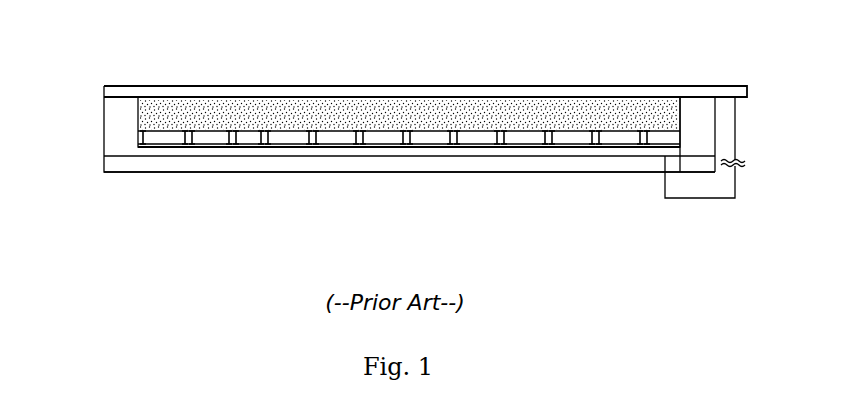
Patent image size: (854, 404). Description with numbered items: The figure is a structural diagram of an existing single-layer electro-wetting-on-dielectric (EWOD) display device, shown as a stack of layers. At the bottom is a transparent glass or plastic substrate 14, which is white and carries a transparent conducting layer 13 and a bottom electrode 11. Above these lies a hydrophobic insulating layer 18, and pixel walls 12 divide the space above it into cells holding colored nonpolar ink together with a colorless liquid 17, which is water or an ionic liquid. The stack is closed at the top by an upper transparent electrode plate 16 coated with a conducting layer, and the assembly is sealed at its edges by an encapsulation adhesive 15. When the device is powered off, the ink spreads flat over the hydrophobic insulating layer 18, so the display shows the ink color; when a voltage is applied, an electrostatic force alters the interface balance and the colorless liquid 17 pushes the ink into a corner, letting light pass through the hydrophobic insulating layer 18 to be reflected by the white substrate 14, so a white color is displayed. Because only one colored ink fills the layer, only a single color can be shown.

The bottom electrode 11 is at (592, 156).
The pixel wall 12 is at (501, 147).
The transparent conducting layer 13 is at (283, 148).
The substrate 14 is at (166, 158).
The encapsulation adhesive 15 is at (104, 130).
The upper transparent electrode plate 16 is at (153, 86).
The colorless liquid 17 is at (392, 105).
The hydrophobic insulating layer 18 is at (477, 137).